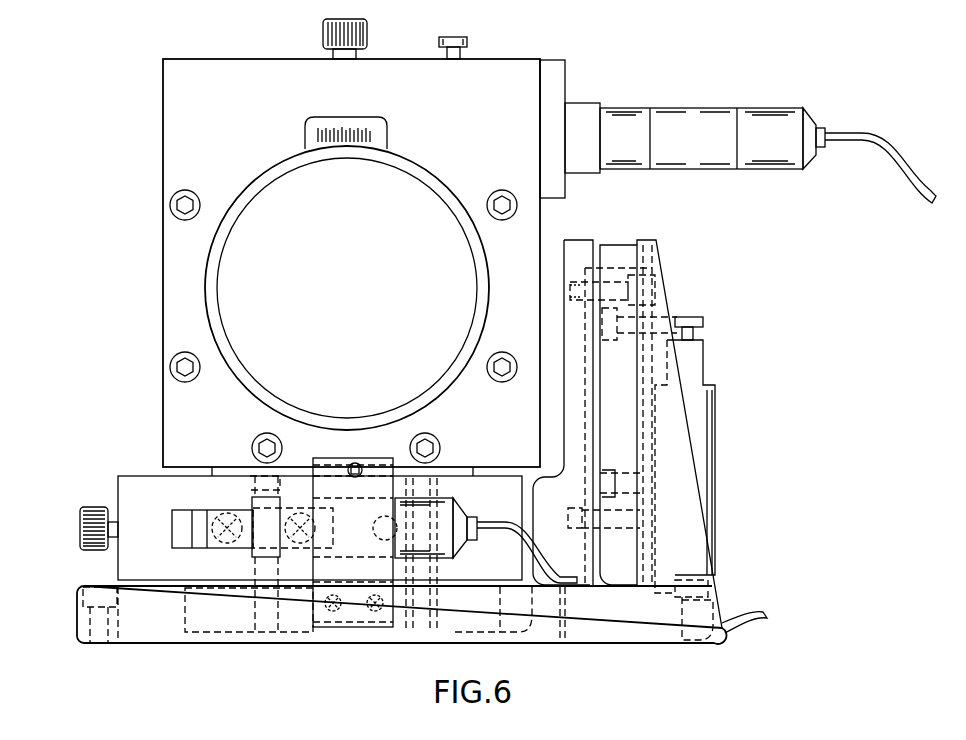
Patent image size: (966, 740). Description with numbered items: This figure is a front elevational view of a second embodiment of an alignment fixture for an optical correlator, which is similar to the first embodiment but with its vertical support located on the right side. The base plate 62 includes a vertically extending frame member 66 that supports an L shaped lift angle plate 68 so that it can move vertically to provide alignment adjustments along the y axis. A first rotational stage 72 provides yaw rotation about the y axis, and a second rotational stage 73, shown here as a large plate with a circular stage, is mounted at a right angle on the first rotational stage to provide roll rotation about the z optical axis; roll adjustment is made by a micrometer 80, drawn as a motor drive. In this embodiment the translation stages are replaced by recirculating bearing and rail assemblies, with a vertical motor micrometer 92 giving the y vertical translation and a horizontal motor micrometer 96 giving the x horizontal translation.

The second rotational stage 73 is at (238, 142).
The micrometer 80 is at (763, 107).
The L shaped lift angle plate 68 is at (585, 238).
The vertically extending frame member 66 is at (663, 265).
The vertical motor micrometer 92 is at (718, 384).
The first rotational stage 72 is at (167, 509).
The horizontal motor micrometer 96 is at (458, 505).
The base plate 62 is at (630, 622).